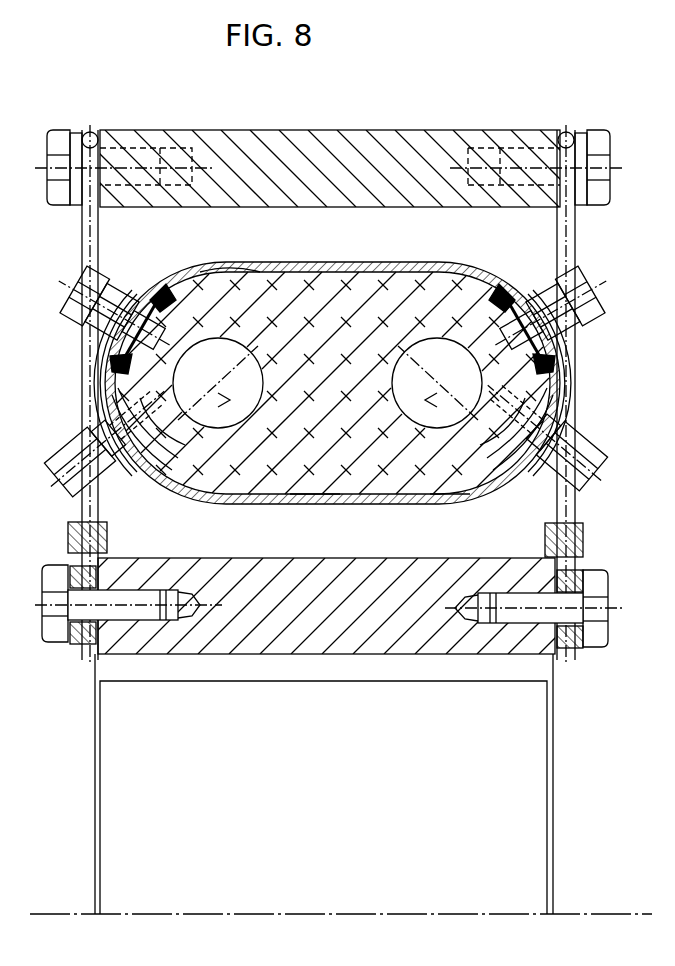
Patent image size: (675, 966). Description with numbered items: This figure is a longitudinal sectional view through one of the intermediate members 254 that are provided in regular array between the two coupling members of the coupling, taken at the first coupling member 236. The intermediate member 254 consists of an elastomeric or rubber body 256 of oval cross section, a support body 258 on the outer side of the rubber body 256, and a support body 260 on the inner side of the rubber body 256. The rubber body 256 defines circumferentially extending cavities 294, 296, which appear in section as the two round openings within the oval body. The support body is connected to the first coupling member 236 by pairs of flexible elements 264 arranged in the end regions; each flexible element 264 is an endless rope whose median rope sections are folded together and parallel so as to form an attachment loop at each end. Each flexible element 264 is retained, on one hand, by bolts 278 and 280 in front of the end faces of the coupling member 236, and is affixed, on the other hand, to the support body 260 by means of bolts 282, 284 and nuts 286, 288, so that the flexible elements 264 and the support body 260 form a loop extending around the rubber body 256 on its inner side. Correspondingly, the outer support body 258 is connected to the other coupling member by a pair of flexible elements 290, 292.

The first coupling member 236 is at (338, 150).
The intermediate member 254 is at (366, 262).
The elastomeric or rubber body 256 is at (312, 504).
The support body 258 is at (232, 264).
The support body 260 is at (456, 504).
The flexible element 264 is at (86, 222).
The bolt 278 is at (57, 146).
The bolt 280 is at (597, 146).
The bolt 282 is at (140, 442).
The bolt 284 is at (507, 448).
The nut 286 is at (62, 438).
The nut 288 is at (588, 436).
The flexible element 290 is at (105, 518).
The flexible element 292 is at (585, 519).
The circumferentially extending cavity 294 is at (218, 383).
The circumferentially extending cavity 296 is at (437, 383).